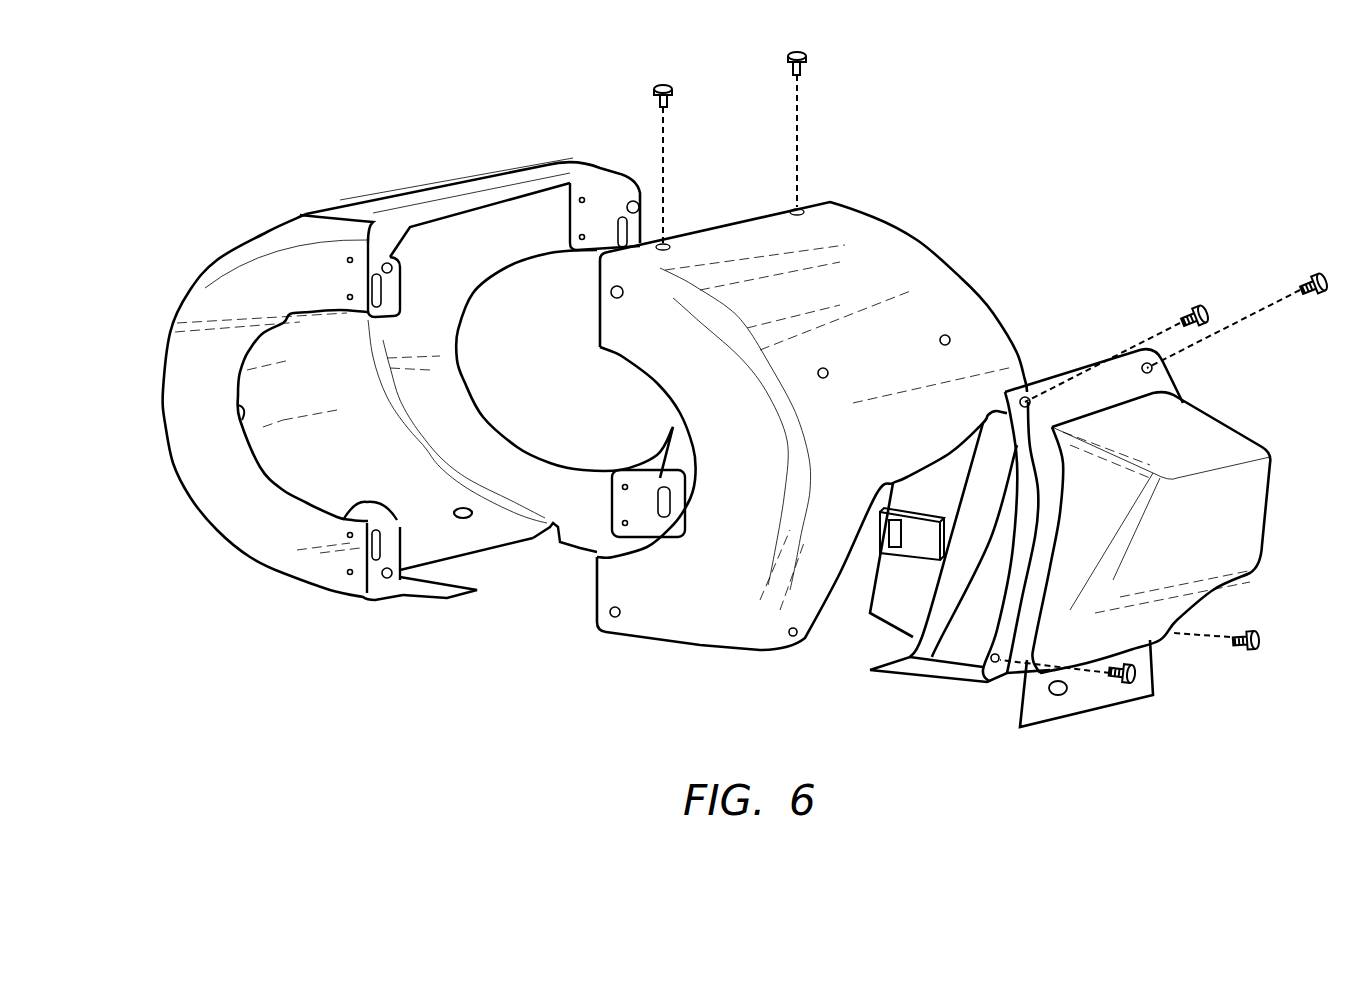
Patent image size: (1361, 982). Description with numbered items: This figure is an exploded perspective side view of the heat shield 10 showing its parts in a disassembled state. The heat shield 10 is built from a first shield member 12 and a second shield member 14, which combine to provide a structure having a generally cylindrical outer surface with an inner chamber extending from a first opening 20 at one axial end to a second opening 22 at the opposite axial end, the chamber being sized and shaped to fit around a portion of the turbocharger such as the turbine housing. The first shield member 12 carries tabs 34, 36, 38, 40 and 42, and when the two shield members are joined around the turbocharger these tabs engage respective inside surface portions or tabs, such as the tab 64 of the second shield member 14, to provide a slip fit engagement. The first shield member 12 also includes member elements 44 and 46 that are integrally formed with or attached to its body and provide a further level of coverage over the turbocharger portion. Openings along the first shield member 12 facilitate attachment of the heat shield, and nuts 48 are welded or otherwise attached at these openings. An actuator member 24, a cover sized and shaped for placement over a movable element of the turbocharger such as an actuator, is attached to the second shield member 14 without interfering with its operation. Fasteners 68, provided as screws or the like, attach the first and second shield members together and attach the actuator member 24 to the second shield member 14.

The heat shield 10 is at (948, 174).
The first shield member 12 is at (274, 244).
The second shield member 14 is at (960, 284).
The first opening 20 is at (657, 381).
The second opening 22 is at (463, 387).
The actuator member 24 is at (1205, 433).
The tab 34 is at (527, 188).
The tab 36 is at (383, 300).
The tab 38 is at (370, 570).
The tab 40 is at (620, 203).
The tab 42 is at (660, 490).
The member element 44 is at (420, 592).
The member element 46 is at (583, 537).
The nut 48 is at (463, 509).
The tab 64 is at (920, 542).
The fastener 68 is at (672, 90).